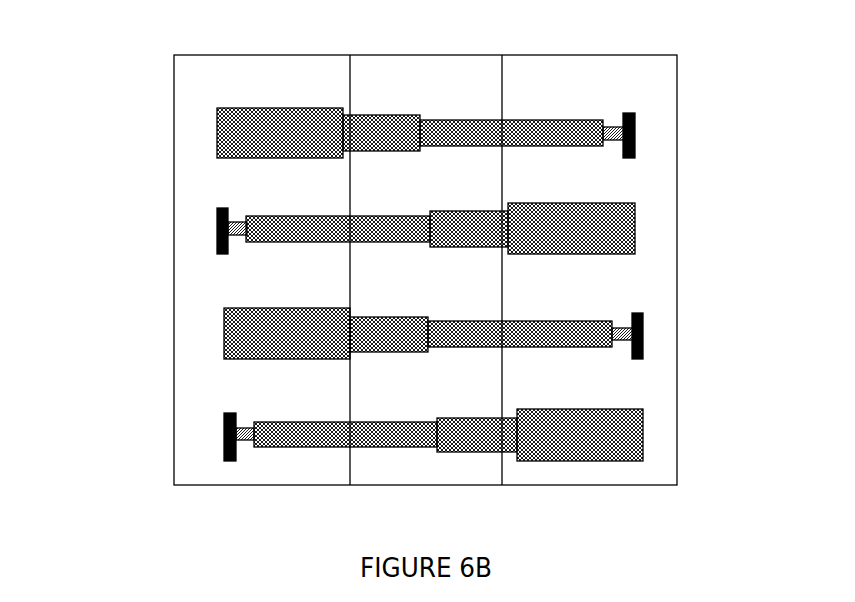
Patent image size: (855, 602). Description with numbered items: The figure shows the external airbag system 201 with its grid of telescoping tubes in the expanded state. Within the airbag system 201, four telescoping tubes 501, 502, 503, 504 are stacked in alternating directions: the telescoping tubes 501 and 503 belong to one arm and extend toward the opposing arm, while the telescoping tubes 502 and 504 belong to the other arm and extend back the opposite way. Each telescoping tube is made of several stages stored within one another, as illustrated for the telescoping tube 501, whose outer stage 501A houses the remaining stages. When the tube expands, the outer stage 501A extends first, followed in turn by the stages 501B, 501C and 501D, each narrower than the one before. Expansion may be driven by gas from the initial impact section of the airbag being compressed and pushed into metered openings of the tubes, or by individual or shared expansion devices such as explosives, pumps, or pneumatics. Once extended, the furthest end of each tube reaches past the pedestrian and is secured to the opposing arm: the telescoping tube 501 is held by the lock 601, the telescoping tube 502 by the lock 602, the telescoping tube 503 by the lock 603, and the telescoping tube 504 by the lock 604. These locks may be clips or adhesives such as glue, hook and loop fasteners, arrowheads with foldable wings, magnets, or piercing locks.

The airbag system 201 is at (174, 57).
The telescoping tube 501 is at (381, 111).
The outer stage 501A is at (310, 108).
The stage 501B is at (382, 114).
The stage 501C is at (513, 120).
The stage 501D is at (613, 122).
The lock 601 is at (636, 132).
The lock 602 is at (217, 228).
The telescoping tube 502 is at (635, 232).
The telescoping tube 503 is at (224, 347).
The lock 603 is at (643, 338).
The lock 604 is at (224, 432).
The telescoping tube 504 is at (643, 437).